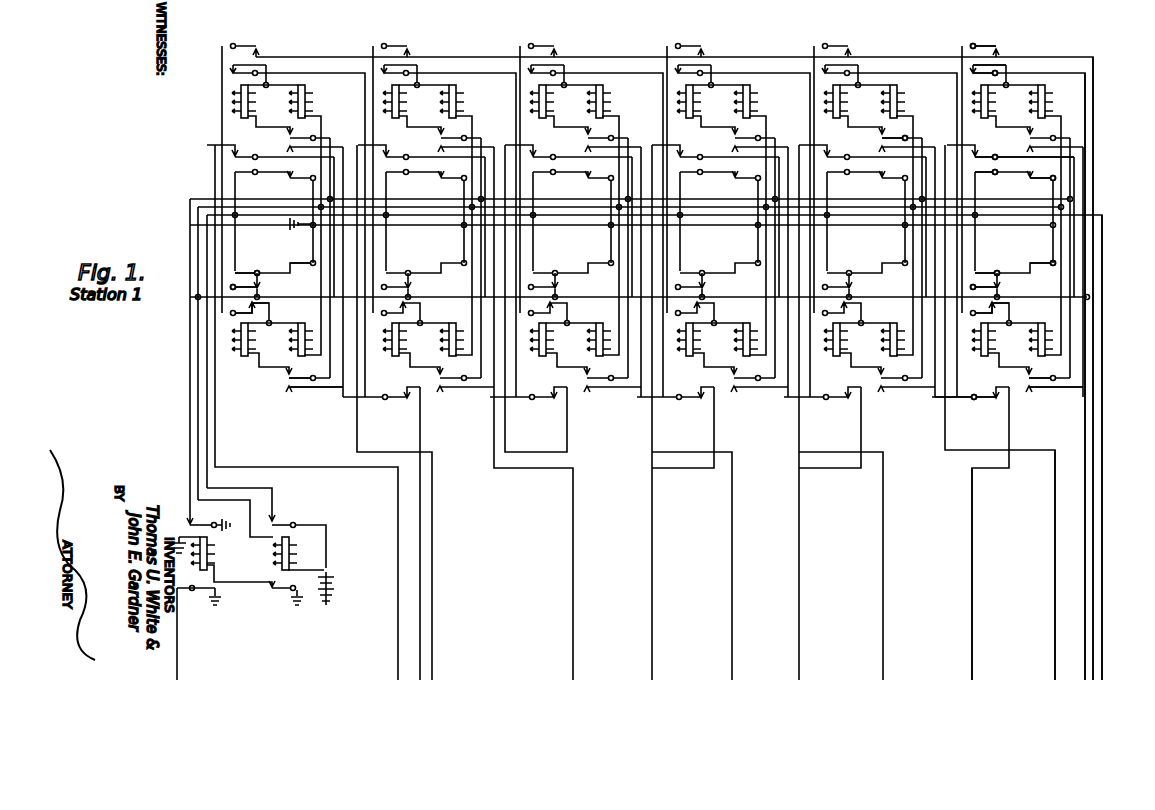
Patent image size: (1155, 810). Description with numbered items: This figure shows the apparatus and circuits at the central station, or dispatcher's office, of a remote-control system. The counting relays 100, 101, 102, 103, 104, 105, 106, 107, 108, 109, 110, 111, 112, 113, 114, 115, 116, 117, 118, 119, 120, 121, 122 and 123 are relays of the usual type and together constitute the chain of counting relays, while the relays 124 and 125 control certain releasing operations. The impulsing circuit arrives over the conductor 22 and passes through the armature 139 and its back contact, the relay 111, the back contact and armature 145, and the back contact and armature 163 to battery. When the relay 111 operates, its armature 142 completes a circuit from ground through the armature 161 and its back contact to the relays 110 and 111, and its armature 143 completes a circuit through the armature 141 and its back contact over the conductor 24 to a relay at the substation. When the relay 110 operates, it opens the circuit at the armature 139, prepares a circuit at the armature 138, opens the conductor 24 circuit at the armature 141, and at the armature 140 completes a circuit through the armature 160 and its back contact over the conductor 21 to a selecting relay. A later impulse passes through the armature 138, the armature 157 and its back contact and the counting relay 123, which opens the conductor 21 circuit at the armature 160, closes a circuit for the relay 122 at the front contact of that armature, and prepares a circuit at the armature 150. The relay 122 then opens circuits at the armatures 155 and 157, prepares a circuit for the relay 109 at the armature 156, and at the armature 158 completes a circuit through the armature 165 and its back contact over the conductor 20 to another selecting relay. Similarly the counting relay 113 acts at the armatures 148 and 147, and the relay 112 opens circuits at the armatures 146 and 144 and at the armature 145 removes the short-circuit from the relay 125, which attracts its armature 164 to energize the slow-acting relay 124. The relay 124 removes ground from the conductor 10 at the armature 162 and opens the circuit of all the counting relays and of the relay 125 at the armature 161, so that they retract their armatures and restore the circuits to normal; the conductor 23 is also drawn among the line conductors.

The conductor 10 is at (182, 675).
The conductor 20 is at (971, 641).
The conductor 21 is at (1053, 636).
The conductor 22 is at (1084, 641).
The line conductor 23 is at (1096, 646).
The conductor 24 is at (1103, 668).
The counting relay 100 is at (250, 105).
The counting relay 101 is at (312, 106).
The counting relay 102 is at (401, 105).
The counting relay 103 is at (463, 106).
The counting relay 104 is at (548, 105).
The counting relay 105 is at (610, 106).
The counting relay 106 is at (695, 105).
The counting relay 107 is at (757, 106).
The counting relay 108 is at (842, 105).
The counting relay 109 is at (904, 106).
The counting relay 110 is at (990, 105).
The counting relay 111 is at (1049, 106).
The counting relay 112 is at (247, 358).
The counting relay 113 is at (297, 343).
The counting relay 114 is at (392, 348).
The counting relay 115 is at (448, 343).
The counting relay 116 is at (538, 352).
The counting relay 117 is at (595, 343).
The counting relay 118 is at (686, 348).
The counting relay 119 is at (742, 343).
The counting relay 120 is at (832, 350).
The counting relay 121 is at (889, 343).
The counting relay 122 is at (980, 345).
The counting relay 123 is at (1037, 343).
The slow-acting relay 124 is at (210, 561).
The relay 125 is at (294, 556).
The armature 138 is at (990, 36).
The armature 139 is at (1000, 64).
The armature 140 is at (985, 154).
The armature 141 is at (987, 174).
The armature 142 is at (1026, 156).
The armature 143 is at (1040, 180).
The armature 144 is at (246, 272).
The armature 145 is at (255, 288).
The armature 146 is at (258, 308).
The armature 147 is at (296, 258).
The armature 148 is at (308, 388).
The armature 150 is at (1044, 262).
The armature 155 is at (990, 266).
The armature 156 is at (998, 286).
The armature 157 is at (1002, 306).
The armature 158 is at (981, 400).
The armature 160 is at (1048, 389).
The armature 161 is at (210, 522).
The armature 162 is at (203, 596).
The armature 163 is at (290, 522).
The armature 164 is at (286, 594).
The armature 165 is at (900, 136).